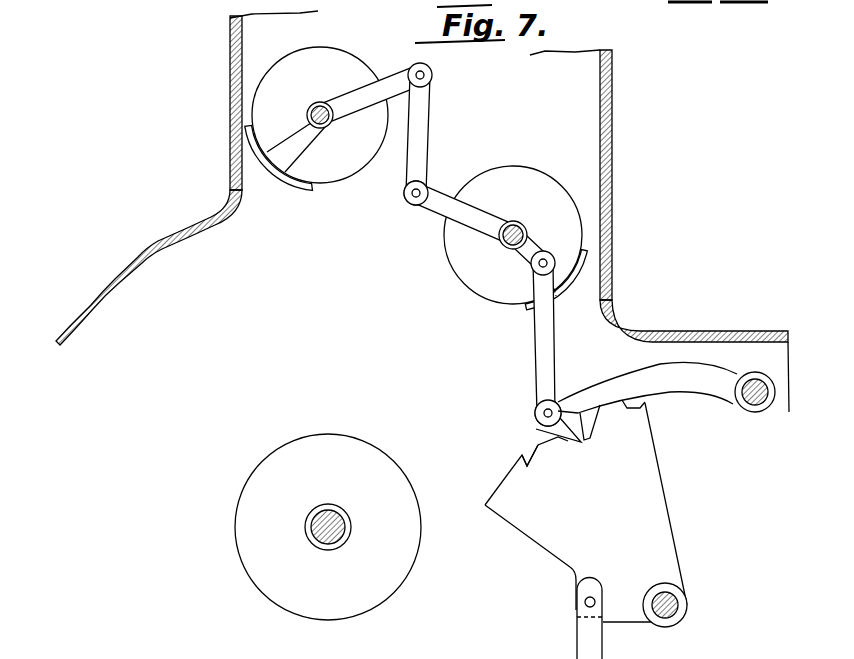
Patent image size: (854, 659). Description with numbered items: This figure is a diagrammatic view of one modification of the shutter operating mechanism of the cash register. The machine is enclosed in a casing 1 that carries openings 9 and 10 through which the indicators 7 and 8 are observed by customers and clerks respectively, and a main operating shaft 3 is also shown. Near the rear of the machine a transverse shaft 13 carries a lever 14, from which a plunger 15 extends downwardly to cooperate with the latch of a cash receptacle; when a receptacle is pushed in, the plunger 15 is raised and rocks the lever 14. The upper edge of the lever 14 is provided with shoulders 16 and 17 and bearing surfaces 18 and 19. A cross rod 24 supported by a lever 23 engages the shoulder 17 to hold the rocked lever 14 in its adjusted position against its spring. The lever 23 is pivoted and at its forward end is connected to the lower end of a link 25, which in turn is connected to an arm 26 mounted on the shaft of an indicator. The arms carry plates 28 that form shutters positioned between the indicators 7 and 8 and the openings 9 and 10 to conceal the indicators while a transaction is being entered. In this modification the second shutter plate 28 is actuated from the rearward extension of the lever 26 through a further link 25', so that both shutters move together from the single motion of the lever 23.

The casing 1 is at (163, 235).
The main operating shaft 3 is at (347, 539).
The indicator 7 is at (528, 172).
The indicator 8 is at (322, 54).
The opening 9 is at (606, 252).
The opening 10 is at (232, 114).
The transverse shaft 13 is at (680, 605).
The lever 14 is at (660, 548).
The plunger 15 is at (584, 644).
The shoulder 16 is at (570, 444).
The shoulder 17 is at (541, 470).
The bearing surface 18 is at (637, 414).
The bearing surface 19 is at (595, 436).
The lever 23 is at (690, 392).
The cross rod 24 is at (300, 146).
The link 25 is at (523, 332).
The link 25' is at (441, 134).
The arm 26 is at (528, 257).
The plate 28 is at (297, 180).